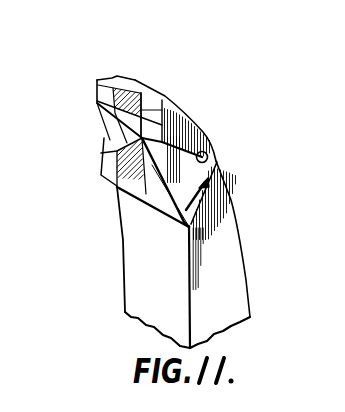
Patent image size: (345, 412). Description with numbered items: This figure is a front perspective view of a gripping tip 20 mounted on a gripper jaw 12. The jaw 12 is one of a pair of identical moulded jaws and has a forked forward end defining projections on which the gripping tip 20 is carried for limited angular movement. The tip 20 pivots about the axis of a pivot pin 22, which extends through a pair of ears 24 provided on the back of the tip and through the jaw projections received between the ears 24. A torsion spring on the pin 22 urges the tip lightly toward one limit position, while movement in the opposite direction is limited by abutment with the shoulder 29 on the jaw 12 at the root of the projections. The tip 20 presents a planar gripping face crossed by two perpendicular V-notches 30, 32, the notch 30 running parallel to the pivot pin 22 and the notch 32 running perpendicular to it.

The jaw 12 is at (238, 219).
The gripping tip 20 is at (166, 99).
The pivot pin 22 is at (212, 154).
The ears 24 is at (207, 152).
The shoulder 29 is at (193, 229).
The V-notch 30 is at (107, 129).
The V-notch 32 is at (108, 102).